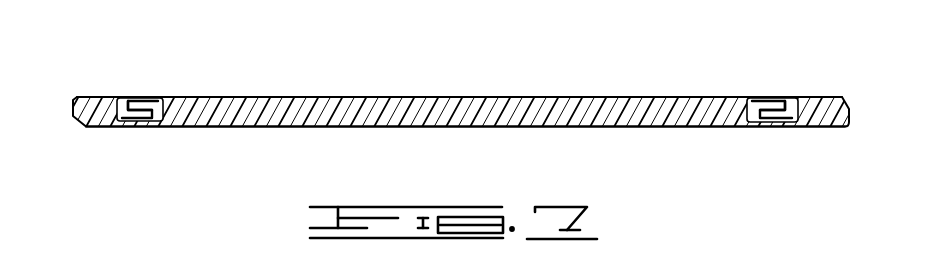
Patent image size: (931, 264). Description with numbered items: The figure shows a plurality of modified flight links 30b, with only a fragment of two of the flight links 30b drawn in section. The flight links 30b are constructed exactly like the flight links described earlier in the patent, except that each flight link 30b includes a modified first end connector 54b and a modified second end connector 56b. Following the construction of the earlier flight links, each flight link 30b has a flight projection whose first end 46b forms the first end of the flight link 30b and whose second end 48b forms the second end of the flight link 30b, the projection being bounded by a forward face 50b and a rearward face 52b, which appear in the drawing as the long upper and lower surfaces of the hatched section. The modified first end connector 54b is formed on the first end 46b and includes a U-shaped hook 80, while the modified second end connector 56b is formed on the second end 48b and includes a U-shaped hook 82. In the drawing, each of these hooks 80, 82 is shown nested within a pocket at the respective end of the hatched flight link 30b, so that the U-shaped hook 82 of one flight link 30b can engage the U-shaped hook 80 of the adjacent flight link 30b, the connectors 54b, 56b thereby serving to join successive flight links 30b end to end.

The flight link 30b is at (87, 90).
The upper surface 50b is at (317, 96).
The lower surface 52b is at (270, 128).
The hook portion 46b is at (778, 100).
The hook portion 48b is at (132, 95).
The modified first end connector 54b is at (778, 128).
The modified second end connector 56b is at (152, 95).
The U-shaped hook 80 is at (788, 128).
The U-shaped hook 82 is at (118, 95).